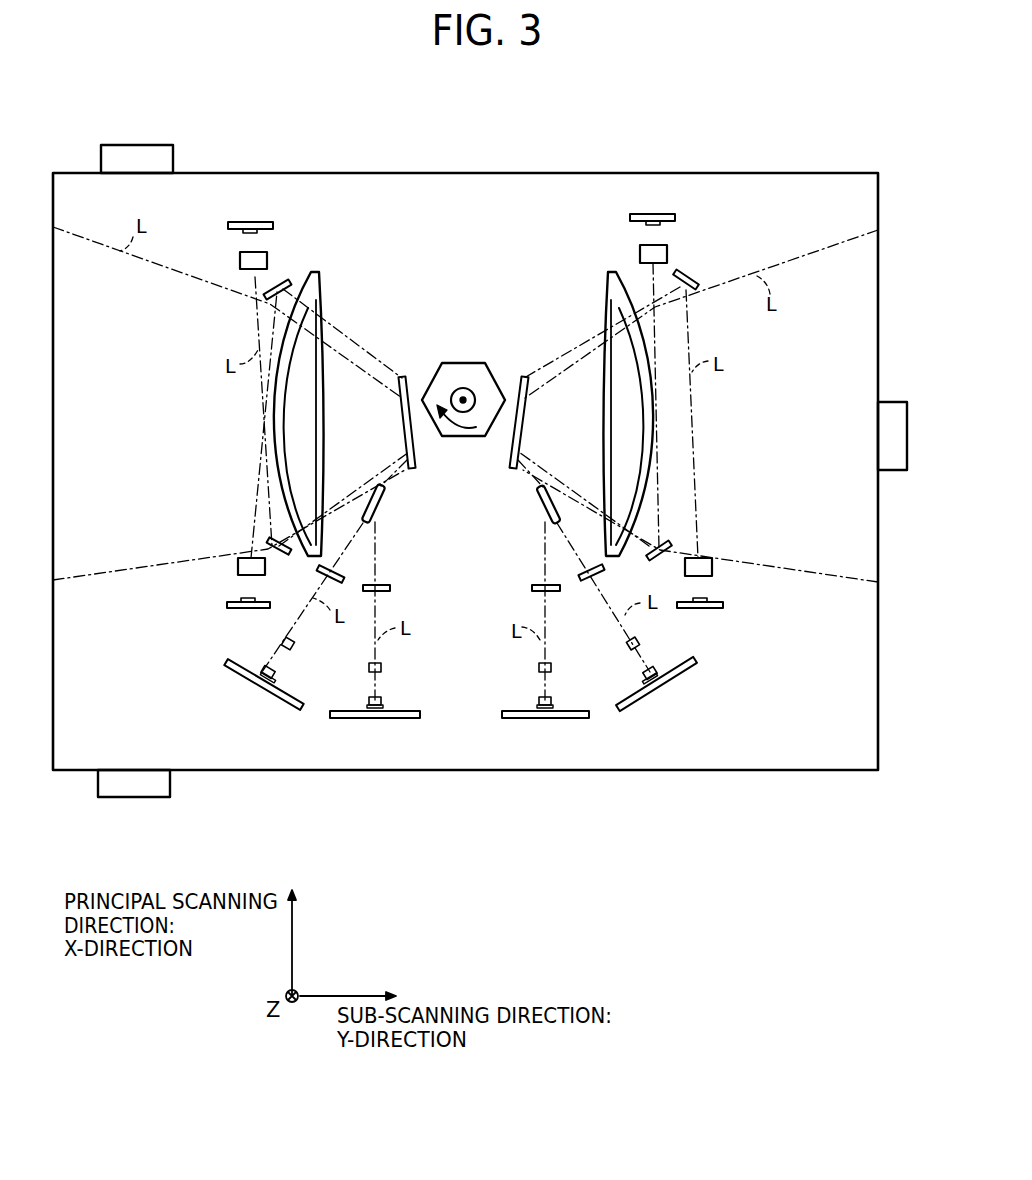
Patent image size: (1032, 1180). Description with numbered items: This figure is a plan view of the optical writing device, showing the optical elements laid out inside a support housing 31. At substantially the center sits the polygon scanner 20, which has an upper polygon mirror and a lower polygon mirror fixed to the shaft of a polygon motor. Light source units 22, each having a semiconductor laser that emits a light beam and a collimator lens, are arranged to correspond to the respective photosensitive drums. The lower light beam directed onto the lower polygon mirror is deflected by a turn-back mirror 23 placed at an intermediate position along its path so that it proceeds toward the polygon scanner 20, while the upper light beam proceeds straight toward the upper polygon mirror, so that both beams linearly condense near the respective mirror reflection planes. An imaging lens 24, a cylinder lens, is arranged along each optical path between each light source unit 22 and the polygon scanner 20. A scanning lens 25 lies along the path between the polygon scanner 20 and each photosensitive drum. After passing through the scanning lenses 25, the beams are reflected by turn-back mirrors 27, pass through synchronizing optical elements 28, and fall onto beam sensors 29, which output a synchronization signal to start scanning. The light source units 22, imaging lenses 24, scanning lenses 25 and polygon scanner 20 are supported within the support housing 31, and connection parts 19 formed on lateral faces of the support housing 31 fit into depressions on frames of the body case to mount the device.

The connection part 19 is at (144, 150).
The polygon scanner 20 is at (463, 362).
The light source unit 22 is at (240, 690).
The turn-back mirror 23 is at (365, 506).
The imaging lens 24 is at (366, 582).
The scanning lens 25 is at (317, 302).
The turn-back mirror 27 is at (290, 283).
The synchronizing optical element 28 is at (268, 258).
The beam sensor 29 is at (252, 223).
The support housing 31 is at (740, 773).